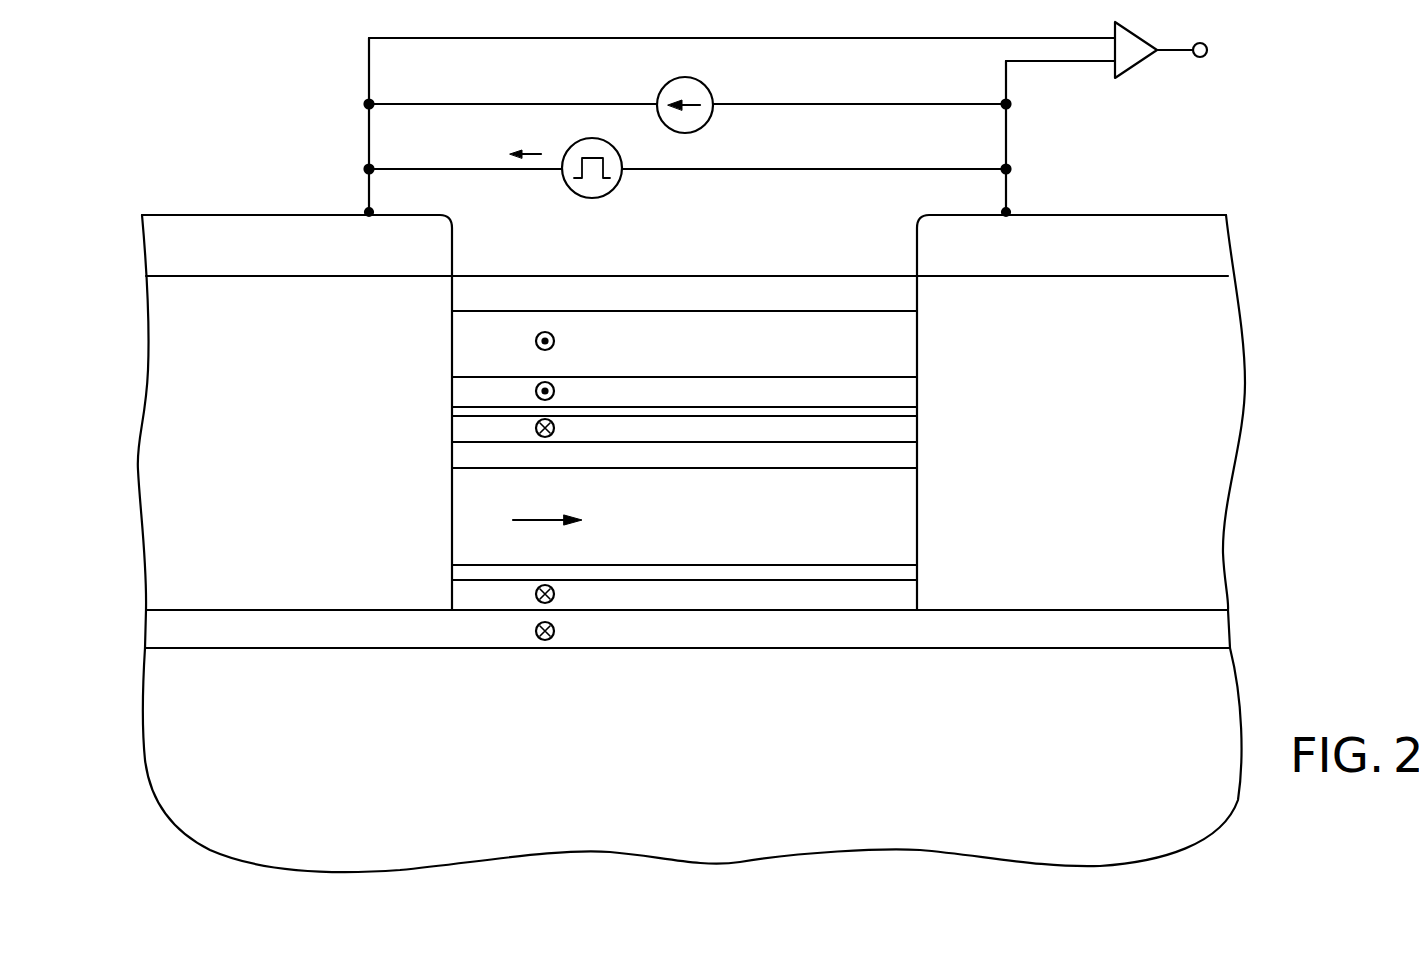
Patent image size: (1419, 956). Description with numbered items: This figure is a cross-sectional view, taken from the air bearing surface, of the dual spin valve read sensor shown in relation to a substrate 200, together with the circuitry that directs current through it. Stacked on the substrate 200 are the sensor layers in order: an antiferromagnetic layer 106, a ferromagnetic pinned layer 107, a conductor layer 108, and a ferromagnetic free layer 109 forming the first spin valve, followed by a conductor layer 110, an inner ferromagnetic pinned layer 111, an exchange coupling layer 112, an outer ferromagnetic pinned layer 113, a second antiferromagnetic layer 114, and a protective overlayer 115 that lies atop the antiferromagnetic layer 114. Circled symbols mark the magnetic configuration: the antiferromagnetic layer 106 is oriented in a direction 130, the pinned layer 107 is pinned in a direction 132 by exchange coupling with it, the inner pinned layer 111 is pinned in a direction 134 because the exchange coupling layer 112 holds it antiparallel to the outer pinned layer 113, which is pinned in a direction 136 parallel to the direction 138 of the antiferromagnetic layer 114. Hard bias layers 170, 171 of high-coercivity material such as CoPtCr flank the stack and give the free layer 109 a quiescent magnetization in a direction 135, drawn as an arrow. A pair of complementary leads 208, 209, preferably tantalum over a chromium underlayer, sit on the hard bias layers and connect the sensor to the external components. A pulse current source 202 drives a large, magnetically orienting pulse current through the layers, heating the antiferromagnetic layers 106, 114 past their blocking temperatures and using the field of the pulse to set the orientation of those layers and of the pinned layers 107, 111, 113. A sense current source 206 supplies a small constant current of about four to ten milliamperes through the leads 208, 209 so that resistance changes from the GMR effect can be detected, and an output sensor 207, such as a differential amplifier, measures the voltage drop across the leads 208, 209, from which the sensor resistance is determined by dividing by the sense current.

The substrate 200 is at (718, 768).
The antiferromagnetic layer 106 is at (1215, 629).
The ferromagnetic pinned layer 107 is at (896, 598).
The conductor layer 108 is at (896, 573).
The ferromagnetic free layer 109 is at (902, 521).
The conductor layer 110 is at (900, 455).
The inner ferromagnetic pinned layer 111 is at (898, 430).
The exchange coupling layer 112 is at (900, 410).
The outer ferromagnetic pinned layer 113 is at (900, 392).
The antiferromagnetic layer 114 is at (900, 343).
The protective overlayer 115 is at (900, 300).
The direction 130 is at (535, 631).
The direction 132 is at (535, 594).
The direction 134 is at (535, 428).
The direction 135 is at (526, 519).
The direction 136 is at (535, 391).
The direction 138 is at (535, 341).
The hard bias layer 170 is at (1228, 350).
The hard bias layer 171 is at (168, 352).
The lead 208 is at (1210, 244).
The lead 209 is at (165, 247).
The pulse current source 202 is at (566, 186).
The sense current source 206 is at (662, 92).
The output sensor 207 is at (1138, 64).